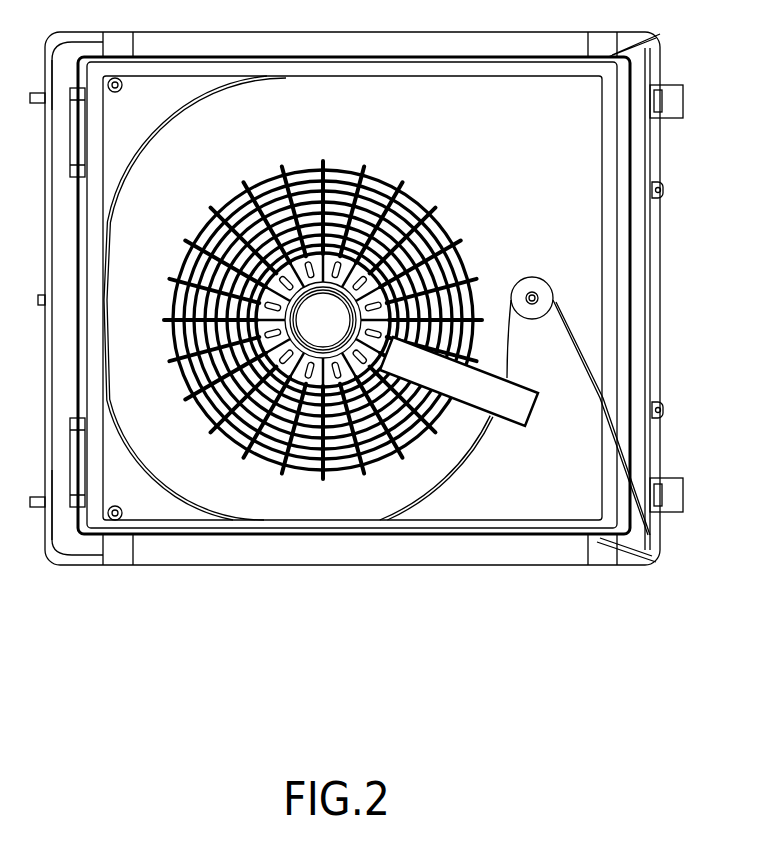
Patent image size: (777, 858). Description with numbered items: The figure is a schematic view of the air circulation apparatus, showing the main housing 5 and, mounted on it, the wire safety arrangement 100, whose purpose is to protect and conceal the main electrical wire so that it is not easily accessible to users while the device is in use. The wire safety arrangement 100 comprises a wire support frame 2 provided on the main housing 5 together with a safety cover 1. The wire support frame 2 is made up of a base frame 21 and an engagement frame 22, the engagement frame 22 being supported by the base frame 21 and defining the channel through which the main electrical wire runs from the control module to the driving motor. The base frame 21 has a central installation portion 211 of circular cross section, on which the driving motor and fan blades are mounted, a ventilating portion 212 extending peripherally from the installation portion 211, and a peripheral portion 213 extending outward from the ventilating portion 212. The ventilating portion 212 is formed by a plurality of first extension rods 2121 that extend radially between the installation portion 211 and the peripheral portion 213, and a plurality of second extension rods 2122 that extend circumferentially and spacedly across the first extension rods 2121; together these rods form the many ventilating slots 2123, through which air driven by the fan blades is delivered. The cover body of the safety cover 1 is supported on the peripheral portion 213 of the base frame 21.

The wire safety arrangement 100 is at (556, 678).
The safety cover 1 is at (490, 417).
The wire support frame 2 is at (470, 658).
The base frame 21 is at (402, 648).
The installation portion 211 is at (273, 467).
The ventilating portion 212 is at (323, 405).
The first extension rods 2121 is at (323, 385).
The second extension rods 2122 is at (323, 395).
The ventilating slots 2123 is at (238, 470).
The peripheral portion 213 is at (402, 490).
The engagement frame 22 is at (427, 400).
The main housing 5 is at (650, 152).